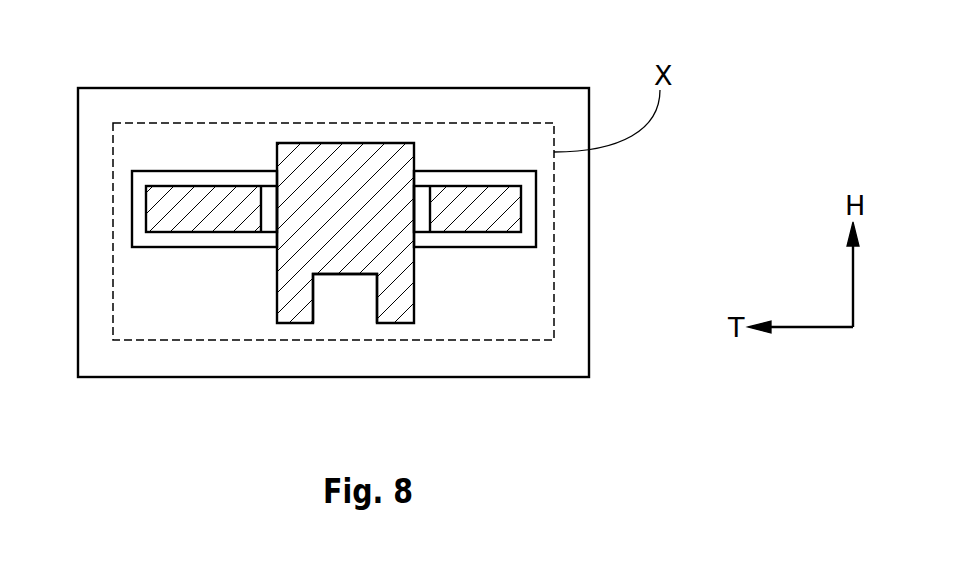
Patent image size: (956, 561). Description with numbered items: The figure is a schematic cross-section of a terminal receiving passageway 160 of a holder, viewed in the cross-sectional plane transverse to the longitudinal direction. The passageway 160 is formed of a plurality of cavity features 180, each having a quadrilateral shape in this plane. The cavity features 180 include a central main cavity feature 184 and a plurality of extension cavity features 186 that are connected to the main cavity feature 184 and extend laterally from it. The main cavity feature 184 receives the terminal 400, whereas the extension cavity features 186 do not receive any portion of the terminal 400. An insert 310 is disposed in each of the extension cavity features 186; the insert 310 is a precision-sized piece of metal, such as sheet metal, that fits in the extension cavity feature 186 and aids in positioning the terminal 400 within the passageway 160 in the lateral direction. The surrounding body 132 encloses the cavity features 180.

The carrier 132 is at (455, 107).
The terminal receiving passageway 160 is at (249, 259).
The cavity features 180 is at (392, 206).
The main cavity feature 184 is at (329, 143).
The extension cavity features 186 is at (165, 170).
The insert 310 is at (173, 200).
The terminal 400 is at (410, 324).